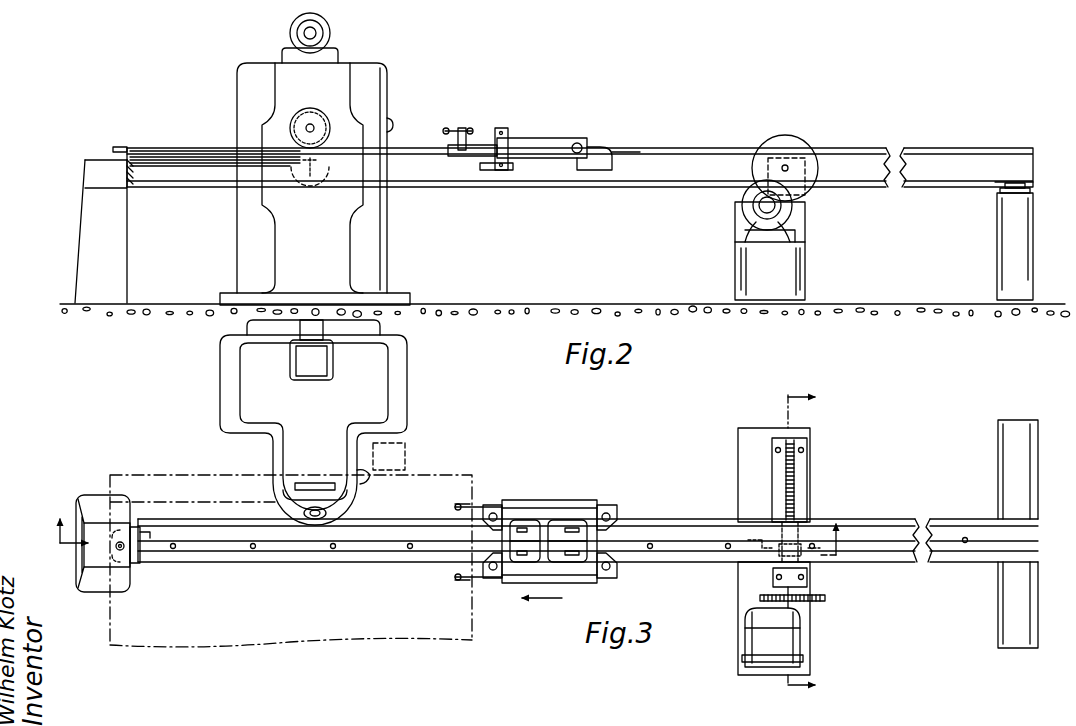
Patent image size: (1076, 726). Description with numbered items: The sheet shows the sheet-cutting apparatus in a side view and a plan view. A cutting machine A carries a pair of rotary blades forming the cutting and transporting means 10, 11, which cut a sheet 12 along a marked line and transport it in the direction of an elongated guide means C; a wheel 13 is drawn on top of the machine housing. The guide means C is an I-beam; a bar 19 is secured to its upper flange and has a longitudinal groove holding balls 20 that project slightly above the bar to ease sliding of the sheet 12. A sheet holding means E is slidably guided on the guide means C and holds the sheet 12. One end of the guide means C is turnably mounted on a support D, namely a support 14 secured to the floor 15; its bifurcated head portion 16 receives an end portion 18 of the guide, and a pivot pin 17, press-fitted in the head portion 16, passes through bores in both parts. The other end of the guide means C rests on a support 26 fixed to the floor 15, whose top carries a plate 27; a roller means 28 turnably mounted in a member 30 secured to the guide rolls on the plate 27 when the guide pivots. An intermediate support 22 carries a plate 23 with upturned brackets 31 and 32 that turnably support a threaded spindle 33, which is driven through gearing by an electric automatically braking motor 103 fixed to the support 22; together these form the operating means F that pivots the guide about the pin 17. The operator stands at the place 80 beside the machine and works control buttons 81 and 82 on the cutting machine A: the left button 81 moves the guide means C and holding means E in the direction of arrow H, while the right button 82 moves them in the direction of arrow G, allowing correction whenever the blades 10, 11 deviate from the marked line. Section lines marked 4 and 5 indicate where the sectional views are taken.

In FIG. 2, the cutting and transporting means 10 is at (302, 116).
In FIG. 3, the cutting and transporting means 10 is at (296, 506).
In FIG. 2, the cutting and transporting means 11 is at (311, 178).
In FIG. 3, the cutting and transporting means 11 is at (340, 512).
In FIG. 2, the sheet 12 is at (178, 153).
In FIG. 3, the sheet 12 is at (461, 476).
In FIG. 2, the pulley 13 is at (330, 23).
In FIG. 3, the pulley 13 is at (292, 369).
In FIG. 2, the support 14 is at (121, 283).
In FIG. 3, the support 14 is at (91, 501).
In FIG. 2, the floor 15 is at (503, 310).
In FIG. 2, the head portion 16 is at (99, 160).
In FIG. 3, the head portion 16 is at (129, 533).
In FIG. 2, the pivot pin 17 is at (118, 148).
In FIG. 3, the pivot pin 17 is at (116, 550).
In FIG. 2, the end portion 18 is at (136, 186).
In FIG. 3, the end portion 18 is at (152, 536).
In FIG. 2, the bar 19 is at (214, 154).
In FIG. 3, the bar 19 is at (219, 544).
In FIG. 2, the balls 20 is at (961, 148).
In FIG. 3, the balls 20 is at (331, 553).
In FIG. 2, the support 22 is at (797, 262).
In FIG. 3, the support 22 is at (760, 598).
In FIG. 3, the plate 23 is at (808, 497).
In FIG. 2, the support 26 is at (998, 238).
In FIG. 3, the support 26 is at (1000, 438).
In FIG. 2, the plate 27 is at (1000, 194).
In FIG. 3, the plate 27 is at (1011, 424).
In FIG. 2, the roller means 28 is at (1027, 189).
In FIG. 2, the member 30 is at (1024, 182).
In FIG. 3, the bracket 31 is at (808, 444).
In FIG. 3, the bracket 32 is at (775, 575).
In FIG. 3, the threaded spindle 33 is at (796, 462).
In FIG. 3, the place 80 is at (410, 442).
In FIG. 2, the control button 81 is at (393, 123).
In FIG. 3, the control button 81 is at (371, 480).
In FIG. 3, the control button 82 is at (405, 457).
In FIG. 2, the electric automatically braking motor 103 is at (790, 209).
In FIG. 3, the electric automatically braking motor 103 is at (752, 641).
In FIG. 2, the cutting machine A is at (233, 99).
In FIG. 3, the cutting machine A is at (216, 400).
In FIG. 2, the guide means C is at (701, 146).
In FIG. 3, the guide means C is at (871, 515).
In FIG. 2, the support D is at (131, 241).
In FIG. 3, the support D is at (134, 584).
In FIG. 2, the sheet holding means E is at (531, 130).
In FIG. 3, the sheet holding means E is at (541, 499).
In FIG. 2, the operating means F is at (726, 224).
In FIG. 3, the operating means F is at (734, 485).
In FIG. 3, the arrow G is at (980, 510).
In FIG. 3, the arrow H is at (975, 568).
In FIG. 3, the section line 4- 4 is at (785, 540).
In FIG. 3, the section line 5- 5 is at (446, 552).